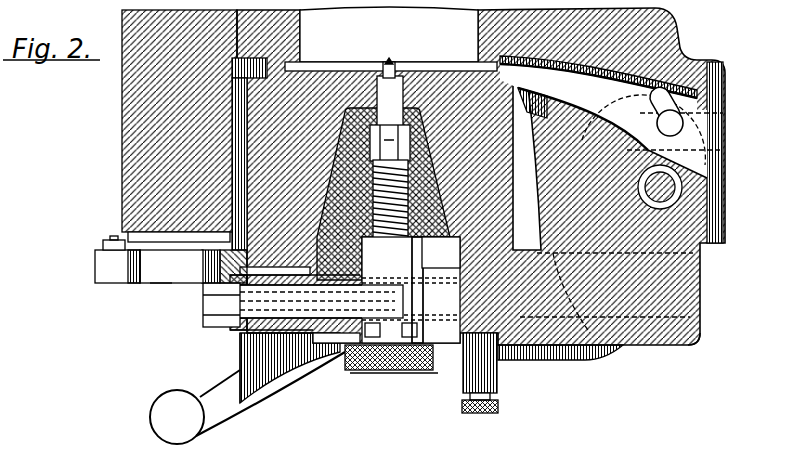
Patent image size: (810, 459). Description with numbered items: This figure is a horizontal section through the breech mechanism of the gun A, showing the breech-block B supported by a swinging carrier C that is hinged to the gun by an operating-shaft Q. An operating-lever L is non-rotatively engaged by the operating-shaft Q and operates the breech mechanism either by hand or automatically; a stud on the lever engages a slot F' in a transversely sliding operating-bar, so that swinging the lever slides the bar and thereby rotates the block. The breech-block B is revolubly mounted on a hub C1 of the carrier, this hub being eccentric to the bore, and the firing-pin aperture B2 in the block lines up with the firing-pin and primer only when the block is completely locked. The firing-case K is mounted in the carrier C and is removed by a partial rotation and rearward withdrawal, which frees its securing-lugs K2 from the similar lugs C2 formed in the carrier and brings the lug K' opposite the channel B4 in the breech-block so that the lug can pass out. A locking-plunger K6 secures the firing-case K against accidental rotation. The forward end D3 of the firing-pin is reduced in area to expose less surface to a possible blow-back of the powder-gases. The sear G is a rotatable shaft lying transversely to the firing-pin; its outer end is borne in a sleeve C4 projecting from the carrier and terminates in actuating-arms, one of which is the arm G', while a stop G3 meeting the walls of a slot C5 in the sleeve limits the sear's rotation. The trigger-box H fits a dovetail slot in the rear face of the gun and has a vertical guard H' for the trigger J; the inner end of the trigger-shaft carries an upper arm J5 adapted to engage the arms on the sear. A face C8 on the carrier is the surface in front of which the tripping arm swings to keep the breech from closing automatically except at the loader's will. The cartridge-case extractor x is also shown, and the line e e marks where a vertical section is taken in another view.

The gun A is at (122, 103).
The breech-block B is at (300, 97).
The firing-pin aperture B2 is at (378, 72).
The channel B4 is at (452, 257).
The forward end of the firing-pin D3 is at (420, 80).
The carrier C is at (670, 344).
The hub C1 is at (368, 190).
The lugs C2 is at (330, 346).
The sleeve C4 is at (222, 333).
The slot C5 is at (440, 298).
The face C8 is at (604, 260).
The section line e e is at (338, 305).
The sear G is at (290, 369).
The actuating-arm G' is at (202, 291).
The stop G3 is at (243, 338).
The trigger-box H is at (151, 281).
The guard H' is at (96, 266).
The trigger J is at (112, 241).
The upper arm J5 is at (203, 285).
The firing-case K is at (402, 323).
The lug K' is at (500, 164).
The securing-lugs K2 is at (416, 372).
The locking-plunger K6 is at (498, 370).
The operating-lever L is at (247, 392).
The slot F' is at (560, 366).
The operating-shaft Q is at (668, 196).
The cartridge-case extractor x is at (611, 117).